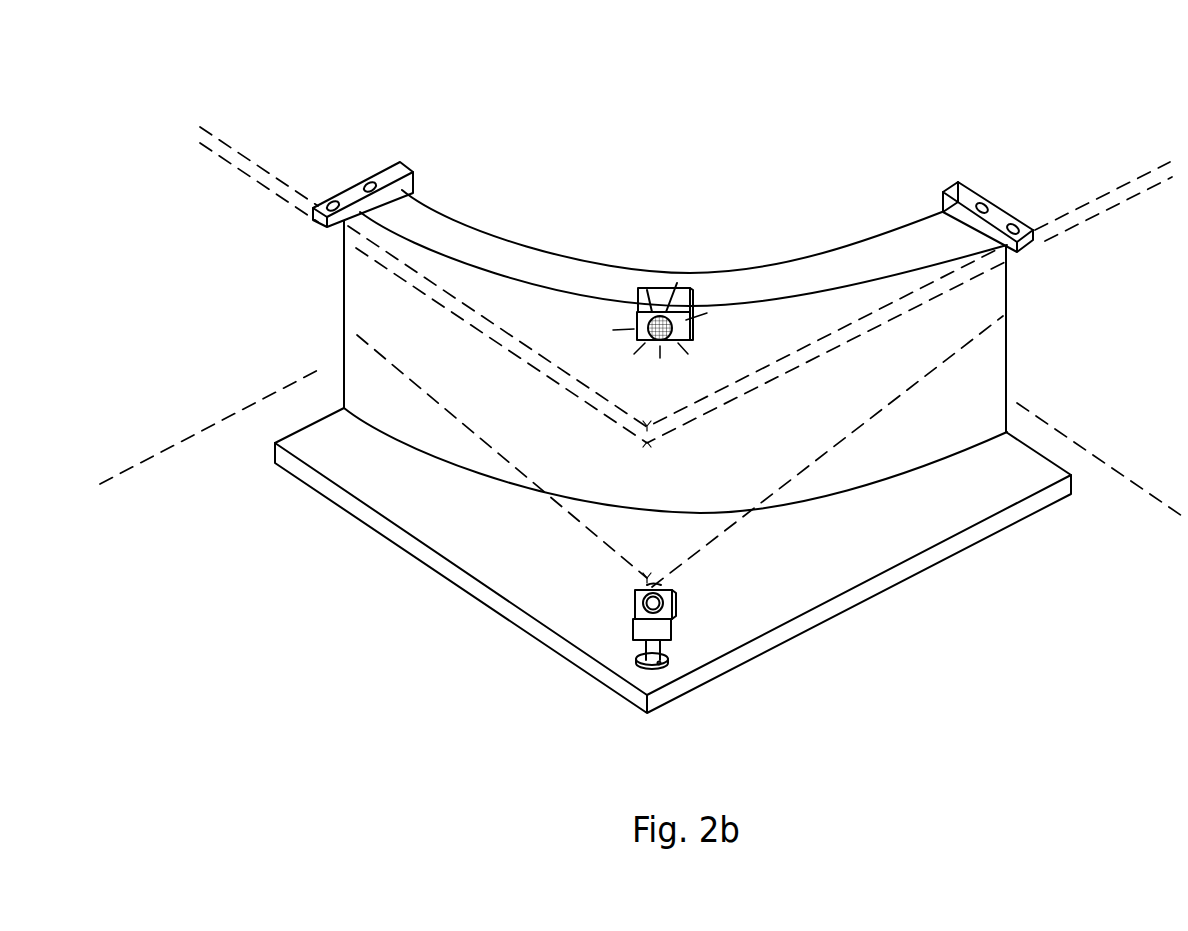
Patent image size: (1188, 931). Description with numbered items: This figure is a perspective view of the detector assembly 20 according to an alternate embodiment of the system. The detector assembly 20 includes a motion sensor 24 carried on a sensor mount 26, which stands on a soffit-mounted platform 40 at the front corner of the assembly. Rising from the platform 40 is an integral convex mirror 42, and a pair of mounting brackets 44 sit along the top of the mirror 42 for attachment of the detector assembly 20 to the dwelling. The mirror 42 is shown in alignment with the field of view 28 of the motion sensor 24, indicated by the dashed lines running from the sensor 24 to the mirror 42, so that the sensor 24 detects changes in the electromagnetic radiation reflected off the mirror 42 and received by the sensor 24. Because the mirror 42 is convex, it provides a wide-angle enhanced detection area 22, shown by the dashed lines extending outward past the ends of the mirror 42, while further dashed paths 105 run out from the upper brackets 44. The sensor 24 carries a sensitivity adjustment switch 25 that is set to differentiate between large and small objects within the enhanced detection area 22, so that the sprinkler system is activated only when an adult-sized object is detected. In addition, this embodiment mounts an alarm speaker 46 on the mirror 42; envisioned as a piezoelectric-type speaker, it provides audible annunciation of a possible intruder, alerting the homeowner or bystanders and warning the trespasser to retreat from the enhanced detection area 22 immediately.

The detector assembly 20 is at (262, 314).
The enhanced detection area 22 is at (162, 452).
The motion sensor 24 is at (570, 653).
The sensitivity adjustment switch 25 is at (640, 603).
The sensor mount 26 is at (640, 663).
The field of view 28 is at (473, 428).
The platform 40 is at (777, 588).
The mirror 42 is at (975, 390).
The mounting bracket 44 is at (384, 168).
The alarm speaker 46 is at (680, 302).
The beam path 105 is at (262, 167).